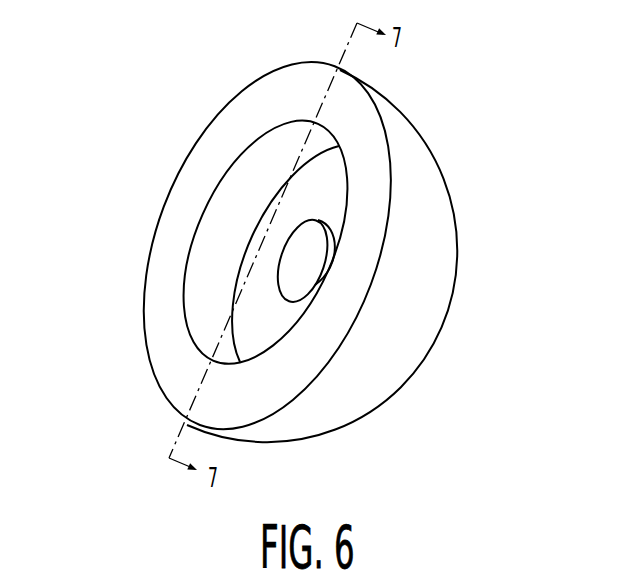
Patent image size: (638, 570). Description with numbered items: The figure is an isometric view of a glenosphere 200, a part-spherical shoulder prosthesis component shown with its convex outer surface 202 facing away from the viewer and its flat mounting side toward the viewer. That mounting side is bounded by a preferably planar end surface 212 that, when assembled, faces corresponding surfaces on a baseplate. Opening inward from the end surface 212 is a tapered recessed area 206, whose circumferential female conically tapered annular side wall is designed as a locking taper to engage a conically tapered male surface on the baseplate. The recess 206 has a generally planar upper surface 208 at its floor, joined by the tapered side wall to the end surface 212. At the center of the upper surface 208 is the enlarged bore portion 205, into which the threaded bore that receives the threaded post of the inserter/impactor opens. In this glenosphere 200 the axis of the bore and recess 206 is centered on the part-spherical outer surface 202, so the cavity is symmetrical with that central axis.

The glenosphere 200 is at (312, 250).
The outer surface 202 is at (403, 365).
The enlarged bore portion 205 is at (297, 260).
The tapered recessed area 206 is at (233, 277).
The upper surface 208 is at (253, 310).
The end surface 212 is at (283, 382).